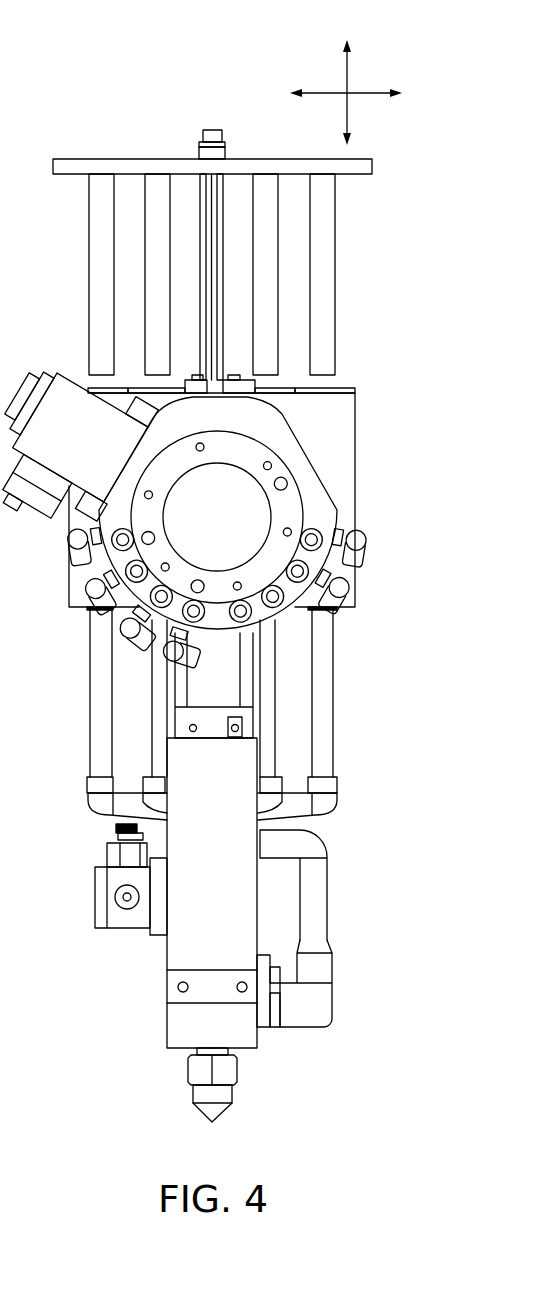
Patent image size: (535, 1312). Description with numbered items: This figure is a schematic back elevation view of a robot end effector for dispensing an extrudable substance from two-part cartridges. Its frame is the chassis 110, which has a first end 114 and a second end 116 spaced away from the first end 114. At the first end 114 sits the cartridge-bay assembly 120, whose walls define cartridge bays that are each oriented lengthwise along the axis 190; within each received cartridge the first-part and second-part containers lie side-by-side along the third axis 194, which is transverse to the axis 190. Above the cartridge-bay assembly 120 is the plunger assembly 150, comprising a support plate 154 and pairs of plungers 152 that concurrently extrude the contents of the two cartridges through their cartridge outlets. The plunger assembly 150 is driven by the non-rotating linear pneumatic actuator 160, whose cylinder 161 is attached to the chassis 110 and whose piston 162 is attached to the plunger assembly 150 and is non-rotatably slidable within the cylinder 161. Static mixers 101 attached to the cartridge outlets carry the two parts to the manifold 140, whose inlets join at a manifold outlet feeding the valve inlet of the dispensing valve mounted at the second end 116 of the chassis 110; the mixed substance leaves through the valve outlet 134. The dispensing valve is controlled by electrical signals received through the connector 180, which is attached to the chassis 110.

The static mixers 101 is at (333, 732).
The chassis 110 is at (167, 958).
The first end 114 is at (223, 426).
The second end 116 is at (163, 1093).
The cartridge-bay assembly 120 is at (357, 428).
The valve outlet 134 is at (207, 1131).
The manifold 140 is at (328, 863).
The plunger assembly 150 is at (262, 276).
The plungers 152 is at (88, 317).
The support plate 154 is at (137, 159).
The non-rotating linear pneumatic actuator 160 is at (173, 687).
The cylinder 161 is at (243, 687).
The piston 162 is at (213, 189).
The connector 180 is at (327, 512).
The axis 190 is at (345, 62).
The third axis 194 is at (368, 88).